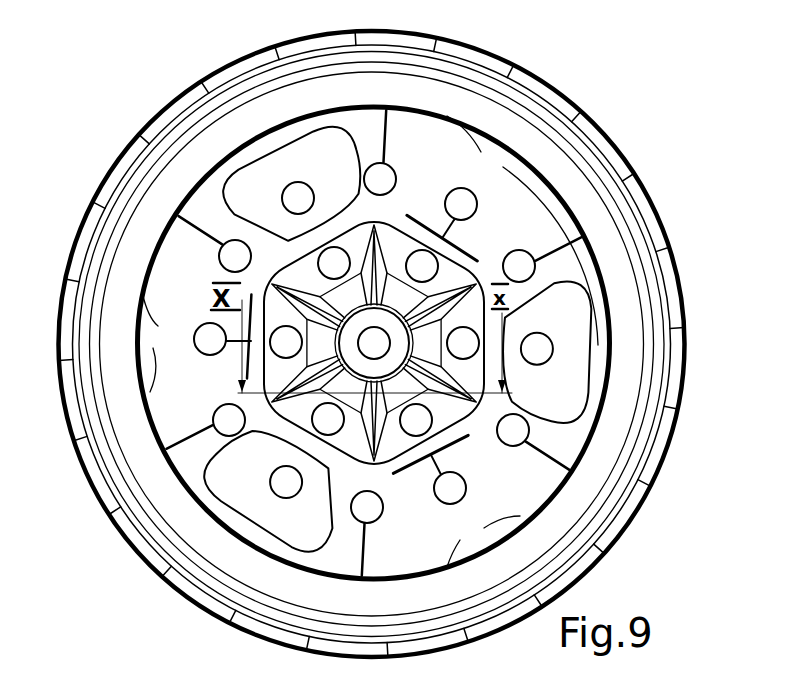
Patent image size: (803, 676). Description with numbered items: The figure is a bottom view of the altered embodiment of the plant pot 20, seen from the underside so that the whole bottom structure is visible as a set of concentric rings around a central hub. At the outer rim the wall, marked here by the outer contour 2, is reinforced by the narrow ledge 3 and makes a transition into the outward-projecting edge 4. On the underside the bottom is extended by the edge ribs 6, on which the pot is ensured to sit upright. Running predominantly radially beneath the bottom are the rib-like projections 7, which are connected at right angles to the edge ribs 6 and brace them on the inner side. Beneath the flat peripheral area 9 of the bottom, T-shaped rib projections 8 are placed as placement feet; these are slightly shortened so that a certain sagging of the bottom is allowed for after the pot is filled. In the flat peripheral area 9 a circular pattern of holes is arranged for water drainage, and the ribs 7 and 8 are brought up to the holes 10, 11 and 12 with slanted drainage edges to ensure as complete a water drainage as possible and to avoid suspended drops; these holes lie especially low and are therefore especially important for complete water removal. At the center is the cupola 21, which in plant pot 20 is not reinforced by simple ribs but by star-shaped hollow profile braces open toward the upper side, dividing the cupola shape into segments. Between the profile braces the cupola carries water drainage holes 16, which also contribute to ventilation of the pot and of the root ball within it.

The plant pot 20 is at (590, 72).
The tire 4 is at (603, 143).
The narrow ledge 3 is at (625, 160).
The rim 2 is at (597, 215).
The edge ribs 6 is at (143, 397).
The cupola 21 is at (259, 393).
The water drainage holes 16 is at (336, 260).
The hole 12 is at (304, 197).
The flat peripheral area 9 is at (438, 176).
The hole 11 is at (467, 203).
The hole 10 is at (521, 250).
The rib-like projections 7 is at (530, 446).
The rib projections 8 is at (410, 474).